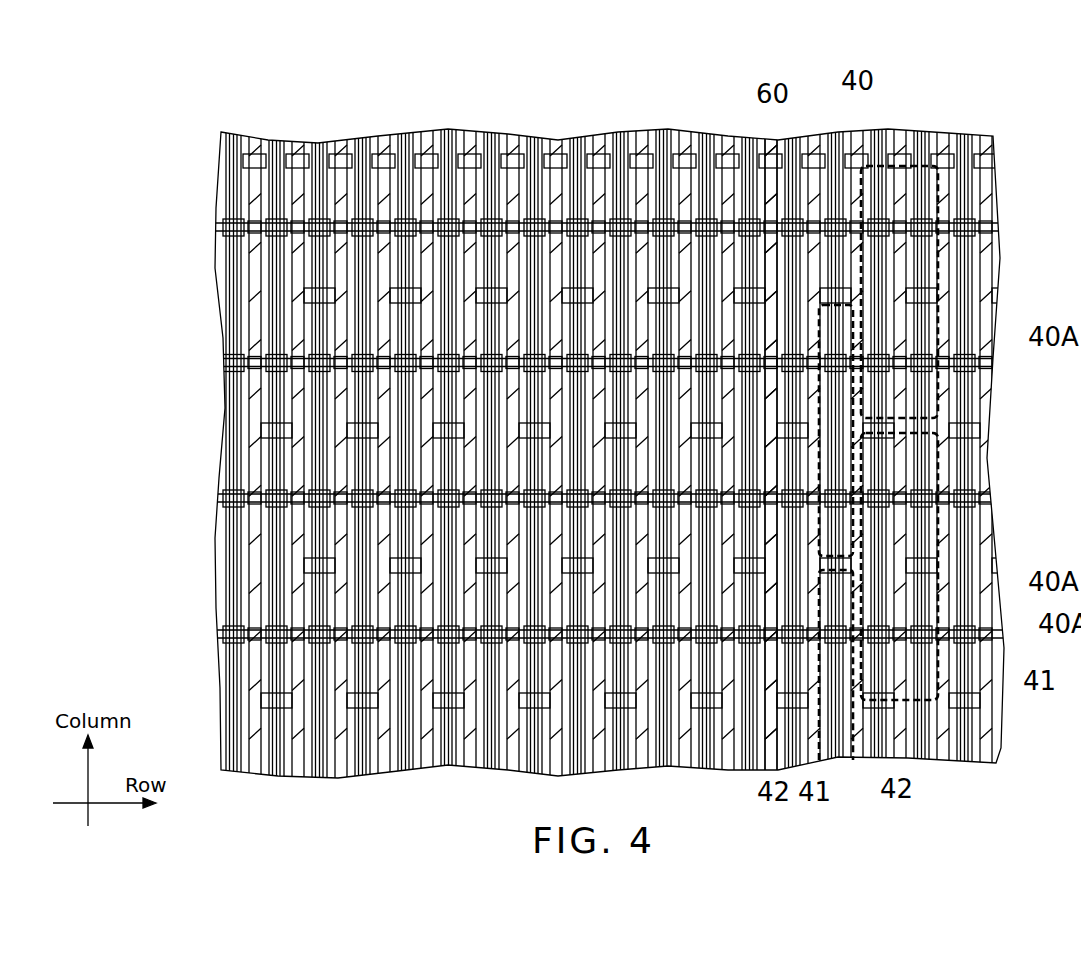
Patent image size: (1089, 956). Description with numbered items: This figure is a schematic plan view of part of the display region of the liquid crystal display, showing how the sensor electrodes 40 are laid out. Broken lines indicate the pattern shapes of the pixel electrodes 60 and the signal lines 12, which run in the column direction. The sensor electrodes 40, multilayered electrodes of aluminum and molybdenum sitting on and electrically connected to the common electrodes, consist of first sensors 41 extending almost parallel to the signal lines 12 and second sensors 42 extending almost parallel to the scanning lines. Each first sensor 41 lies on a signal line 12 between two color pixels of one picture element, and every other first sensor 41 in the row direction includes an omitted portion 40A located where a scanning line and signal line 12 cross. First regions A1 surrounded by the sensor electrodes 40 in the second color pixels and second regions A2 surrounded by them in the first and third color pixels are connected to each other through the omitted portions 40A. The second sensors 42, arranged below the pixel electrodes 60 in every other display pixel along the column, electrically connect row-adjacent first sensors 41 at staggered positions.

The signal line 12 is at (622, 436).
The pixel electrode 60 is at (767, 130).
The sensor electrode 40 is at (848, 155).
The omitted portion 40A is at (857, 350).
The first sensor 41 is at (1013, 672).
The second sensor 42 is at (888, 700).
The first region A1 is at (812, 295).
The second region A2 is at (930, 243).